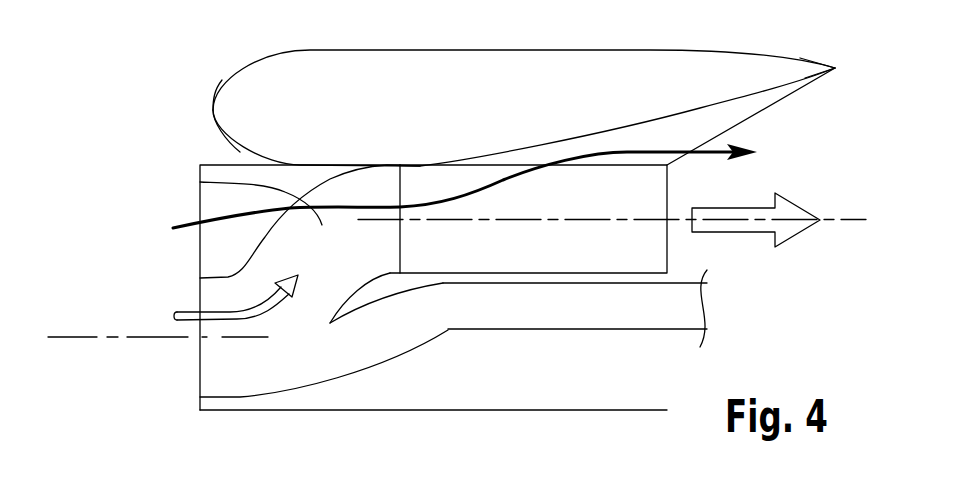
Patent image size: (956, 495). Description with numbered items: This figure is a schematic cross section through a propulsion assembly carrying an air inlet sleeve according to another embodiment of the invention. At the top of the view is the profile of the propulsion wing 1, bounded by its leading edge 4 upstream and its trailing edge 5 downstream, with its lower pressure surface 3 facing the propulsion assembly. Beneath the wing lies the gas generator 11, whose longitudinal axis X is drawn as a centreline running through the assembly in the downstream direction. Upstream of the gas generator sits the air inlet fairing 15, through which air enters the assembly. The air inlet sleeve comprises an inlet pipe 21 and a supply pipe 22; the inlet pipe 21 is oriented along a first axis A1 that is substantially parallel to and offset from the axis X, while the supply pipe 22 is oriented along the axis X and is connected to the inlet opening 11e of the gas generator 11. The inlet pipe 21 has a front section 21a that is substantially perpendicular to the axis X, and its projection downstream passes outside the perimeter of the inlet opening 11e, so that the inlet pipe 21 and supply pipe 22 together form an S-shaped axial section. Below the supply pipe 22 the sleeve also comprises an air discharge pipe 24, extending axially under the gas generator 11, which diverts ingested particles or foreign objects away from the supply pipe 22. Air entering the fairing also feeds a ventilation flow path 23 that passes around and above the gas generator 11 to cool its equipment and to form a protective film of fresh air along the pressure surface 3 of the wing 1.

The propulsion wing 1 is at (597, 78).
The pressure surface 3 is at (810, 88).
The leading edge 4 is at (214, 98).
The trailing edge 5 is at (837, 68).
The gas generator 11 is at (622, 248).
The inlet opening 11e is at (408, 250).
The air inlet fairing 15 is at (192, 205).
The inlet pipe 21 is at (224, 368).
The front section 21a is at (192, 374).
The supply pipe 22 is at (199, 179).
The ventilation flow path 23 is at (228, 243).
The air discharge pipe 24 is at (557, 313).
The first axis A1 is at (68, 346).
The longitudinal axis X is at (846, 212).